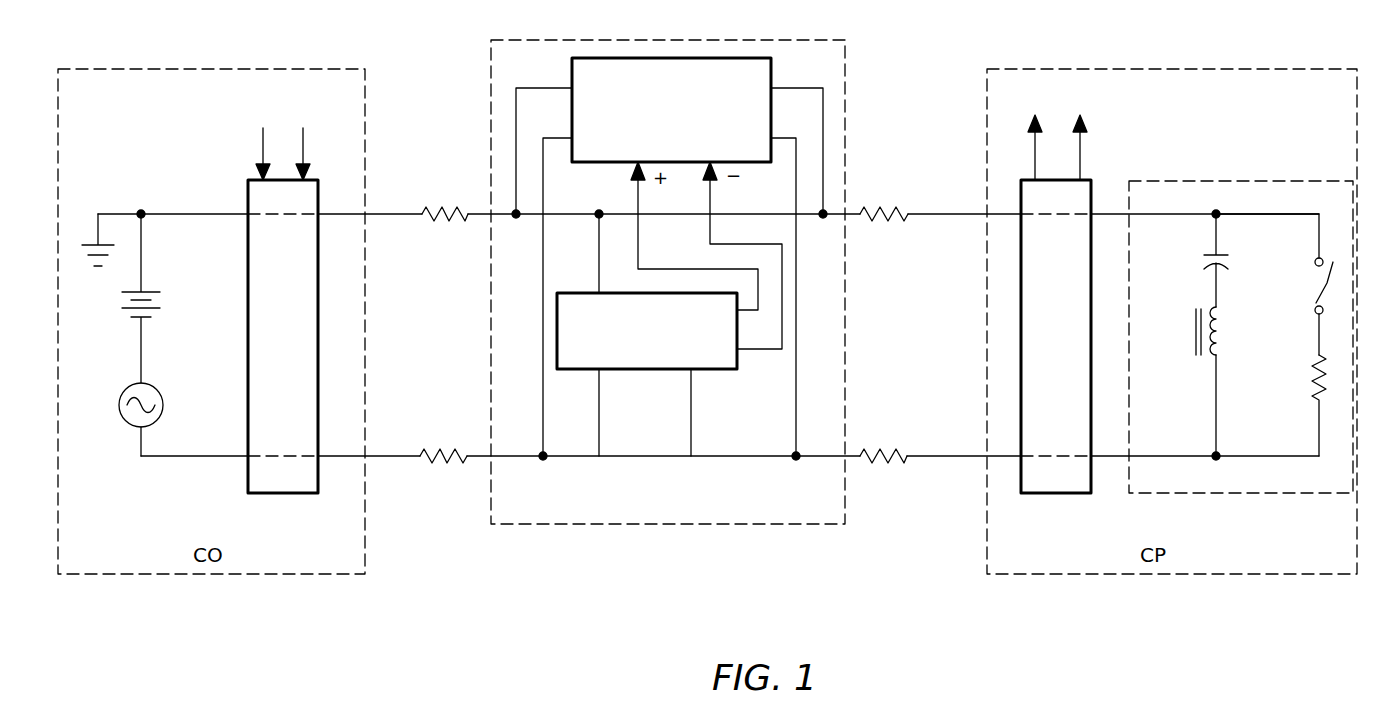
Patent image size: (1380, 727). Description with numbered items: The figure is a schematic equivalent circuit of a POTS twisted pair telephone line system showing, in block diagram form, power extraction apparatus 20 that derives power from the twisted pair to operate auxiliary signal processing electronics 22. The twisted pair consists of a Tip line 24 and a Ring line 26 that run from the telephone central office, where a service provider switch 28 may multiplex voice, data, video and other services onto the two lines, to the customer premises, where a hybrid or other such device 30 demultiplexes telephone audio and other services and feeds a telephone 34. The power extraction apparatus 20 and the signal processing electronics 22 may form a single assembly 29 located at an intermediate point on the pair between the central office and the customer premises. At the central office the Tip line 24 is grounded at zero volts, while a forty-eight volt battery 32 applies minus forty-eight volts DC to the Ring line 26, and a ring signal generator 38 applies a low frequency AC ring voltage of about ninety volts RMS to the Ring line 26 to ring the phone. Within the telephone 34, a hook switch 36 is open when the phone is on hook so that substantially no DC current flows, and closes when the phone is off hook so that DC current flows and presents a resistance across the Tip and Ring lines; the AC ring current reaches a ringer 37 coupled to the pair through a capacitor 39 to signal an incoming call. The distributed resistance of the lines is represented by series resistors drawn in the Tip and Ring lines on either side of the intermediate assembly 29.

The power extraction apparatus 20 is at (702, 369).
The signal processing electronics 22 is at (687, 57).
The Tip line 24 is at (225, 213).
The Ring line 26 is at (176, 456).
The service provider switch 28 is at (272, 493).
The assembly 29 is at (575, 524).
The hybrid device 30 is at (1040, 493).
The 48 volt battery 32 is at (148, 291).
The telephone 34 is at (1276, 181).
The hook switch 36 is at (1316, 303).
The ringer 37 is at (1198, 358).
The ring signal generator 38 is at (155, 387).
The capacitor 39 is at (1222, 254).